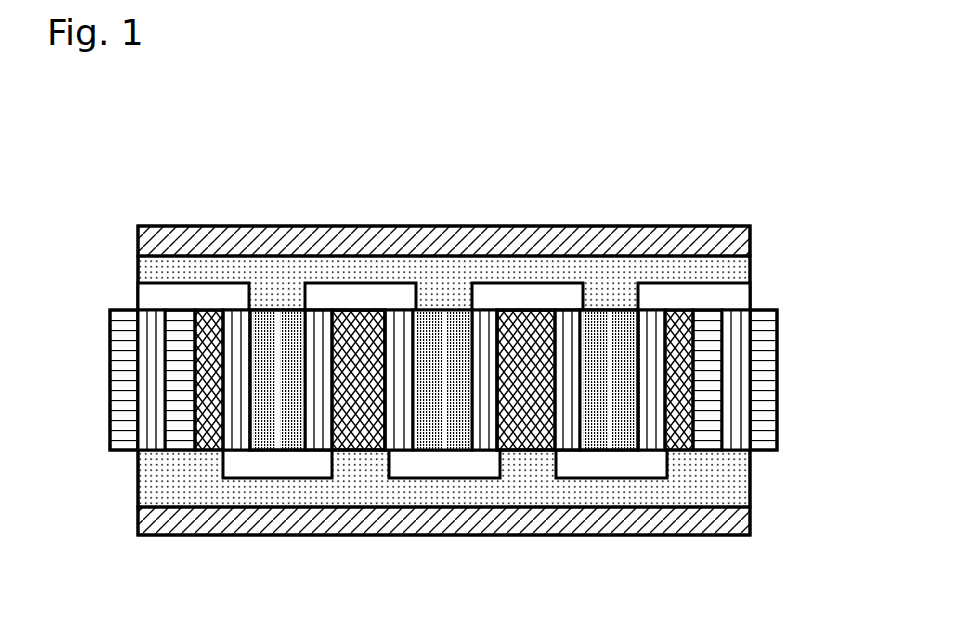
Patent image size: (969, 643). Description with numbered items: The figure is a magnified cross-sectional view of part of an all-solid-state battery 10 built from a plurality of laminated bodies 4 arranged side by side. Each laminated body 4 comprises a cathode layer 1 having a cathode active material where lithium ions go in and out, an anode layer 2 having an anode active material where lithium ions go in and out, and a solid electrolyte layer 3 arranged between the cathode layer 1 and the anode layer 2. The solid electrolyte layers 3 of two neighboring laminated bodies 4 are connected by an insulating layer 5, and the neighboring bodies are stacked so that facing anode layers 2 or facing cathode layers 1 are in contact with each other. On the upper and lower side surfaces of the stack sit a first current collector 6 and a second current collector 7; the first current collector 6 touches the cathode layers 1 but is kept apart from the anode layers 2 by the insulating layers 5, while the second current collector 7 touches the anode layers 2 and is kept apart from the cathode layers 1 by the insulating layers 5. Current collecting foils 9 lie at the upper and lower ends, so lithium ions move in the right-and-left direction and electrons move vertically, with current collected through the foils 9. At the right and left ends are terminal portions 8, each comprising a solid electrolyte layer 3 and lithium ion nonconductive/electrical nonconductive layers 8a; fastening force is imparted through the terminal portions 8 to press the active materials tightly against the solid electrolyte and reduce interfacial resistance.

The all-solid-state battery 10 is at (432, 80).
The current collecting foil 9 is at (752, 244).
The first current collector 6 is at (752, 268).
The second current collector 7 is at (752, 478).
The insulating layer 5 is at (388, 283).
The laminated body 4 is at (360, 172).
The cathode layer 1 is at (293, 310).
The anode layer 2 is at (346, 310).
The solid electrolyte layer 3 is at (318, 310).
The terminal portion 8 is at (53, 312).
The lithium ion nonconductive/electrical nonconductive layer 8a is at (125, 341).